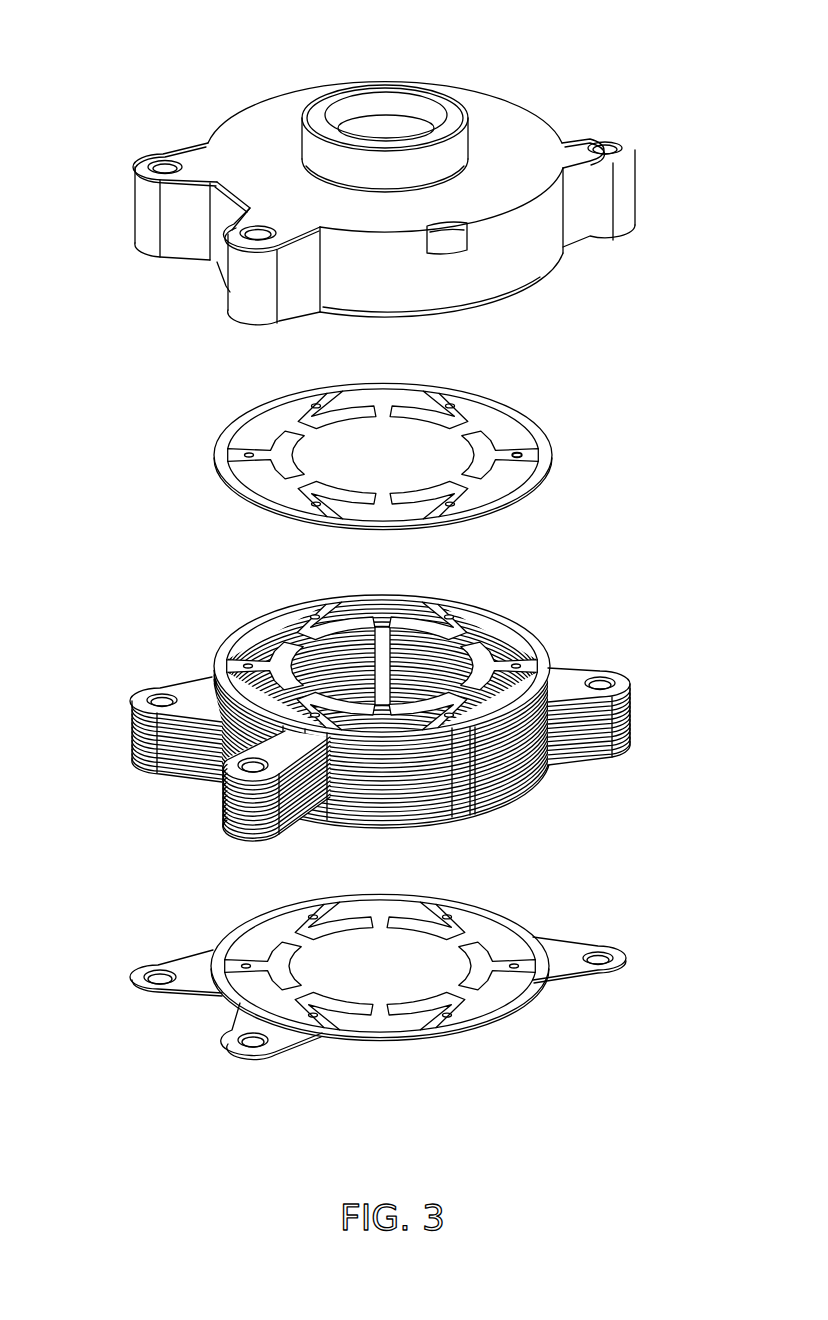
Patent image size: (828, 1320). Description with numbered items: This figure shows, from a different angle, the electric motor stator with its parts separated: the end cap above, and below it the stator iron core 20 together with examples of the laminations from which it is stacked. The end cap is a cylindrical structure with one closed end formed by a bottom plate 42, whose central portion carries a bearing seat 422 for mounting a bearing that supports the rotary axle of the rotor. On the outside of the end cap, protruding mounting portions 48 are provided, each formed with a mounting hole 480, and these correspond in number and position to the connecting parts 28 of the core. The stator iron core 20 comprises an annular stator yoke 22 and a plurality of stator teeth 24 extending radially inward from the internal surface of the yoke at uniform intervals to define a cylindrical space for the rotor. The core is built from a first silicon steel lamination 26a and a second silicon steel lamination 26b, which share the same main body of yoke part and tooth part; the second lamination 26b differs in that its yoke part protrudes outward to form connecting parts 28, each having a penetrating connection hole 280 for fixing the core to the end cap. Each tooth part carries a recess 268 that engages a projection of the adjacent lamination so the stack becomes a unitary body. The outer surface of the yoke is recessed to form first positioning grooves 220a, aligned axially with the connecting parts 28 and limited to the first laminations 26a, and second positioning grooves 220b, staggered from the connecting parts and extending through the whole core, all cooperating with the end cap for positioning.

The bottom plate 42 is at (426, 167).
The bearing seat 422 is at (440, 105).
The mounting portion 48 is at (640, 143).
The mounting hole 480 is at (603, 150).
The first silicon steel lamination 26a is at (433, 422).
The recess 268 is at (517, 452).
The stator iron core 20 is at (350, 847).
The stator yoke 22 is at (388, 711).
The stator tooth 24 is at (521, 645).
The connecting part 28 is at (139, 871).
The connection hole 280 is at (157, 698).
The first positioning groove 220a is at (220, 747).
The second positioning groove 220b is at (463, 777).
The second silicon steel lamination 26b is at (520, 1003).